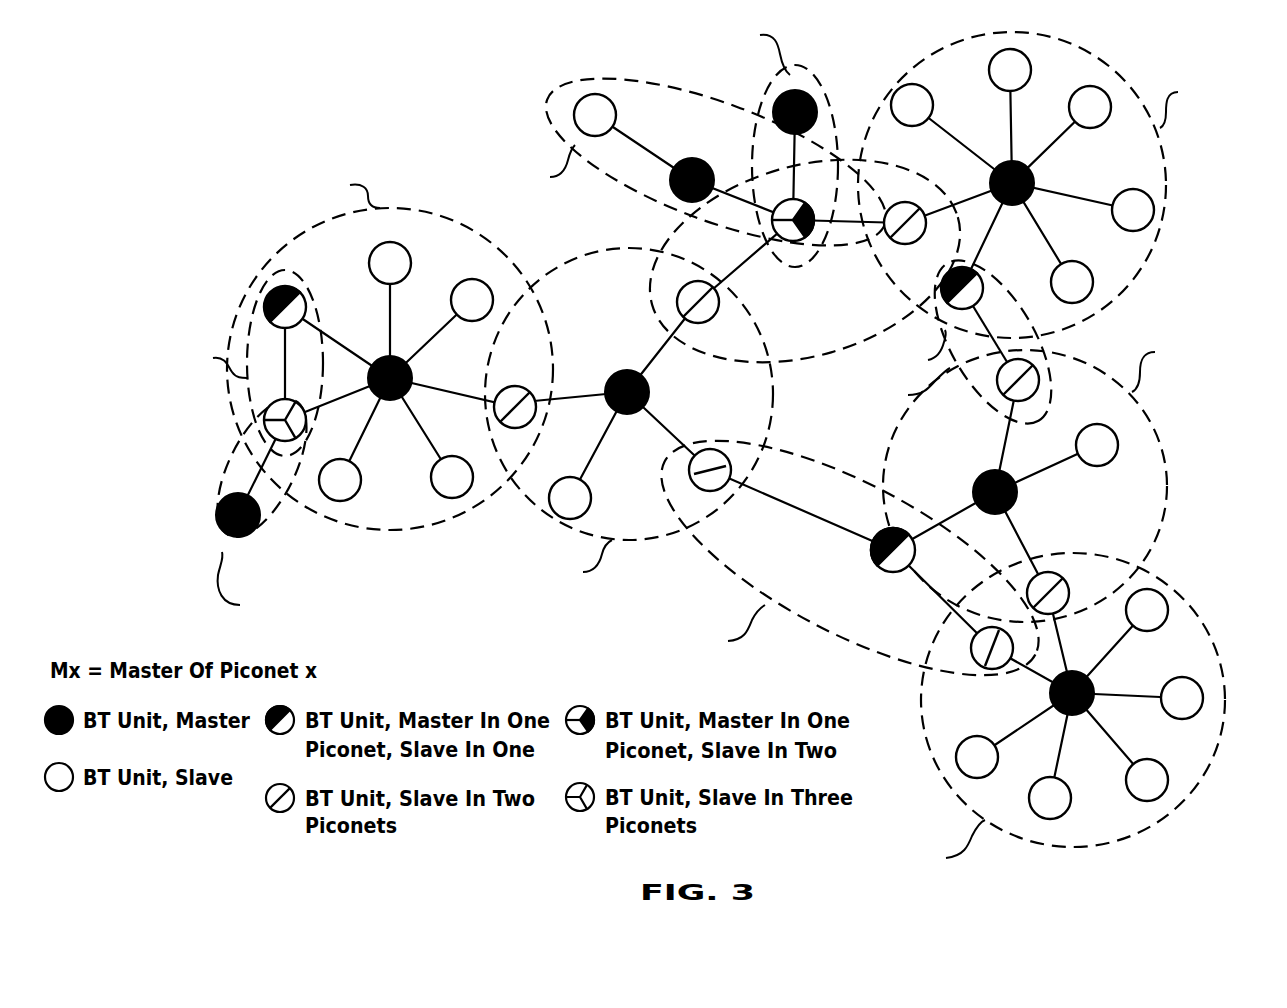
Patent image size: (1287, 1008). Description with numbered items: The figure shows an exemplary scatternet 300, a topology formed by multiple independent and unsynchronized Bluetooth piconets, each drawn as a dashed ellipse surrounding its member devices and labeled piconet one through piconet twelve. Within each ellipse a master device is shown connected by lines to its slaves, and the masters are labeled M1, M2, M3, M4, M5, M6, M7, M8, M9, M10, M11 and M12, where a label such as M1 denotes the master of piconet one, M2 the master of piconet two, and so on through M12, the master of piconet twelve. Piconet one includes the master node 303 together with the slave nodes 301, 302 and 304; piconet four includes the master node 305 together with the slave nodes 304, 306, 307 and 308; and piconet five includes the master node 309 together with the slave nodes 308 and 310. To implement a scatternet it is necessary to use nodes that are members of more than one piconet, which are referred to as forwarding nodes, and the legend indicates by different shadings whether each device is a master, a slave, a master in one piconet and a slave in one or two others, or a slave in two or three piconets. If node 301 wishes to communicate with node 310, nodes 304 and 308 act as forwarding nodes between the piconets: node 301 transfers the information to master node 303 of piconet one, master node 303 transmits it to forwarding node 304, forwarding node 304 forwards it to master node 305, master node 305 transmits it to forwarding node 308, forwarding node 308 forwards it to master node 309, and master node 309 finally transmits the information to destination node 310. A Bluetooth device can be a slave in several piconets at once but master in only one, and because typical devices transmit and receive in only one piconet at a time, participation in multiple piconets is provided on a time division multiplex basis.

The scatternet 300 is at (237, 92).
The slave node 301 is at (355, 498).
The slave node 302 is at (466, 494).
The master node 303 is at (403, 402).
The forwarding node 304 is at (522, 424).
The master node 305 is at (650, 395).
The slave node 306 is at (592, 497).
The slave node 307 is at (678, 298).
The forwarding node 308 is at (714, 492).
The master node 309 is at (893, 572).
The destination node 310 is at (971, 648).
The master of piconet 1 M1 is at (380, 358).
The master of piconet 2 M2 is at (270, 293).
The master of piconet 3 M3 is at (252, 535).
The master of piconet 4 M4 is at (612, 375).
The master of piconet 5 M5 is at (875, 565).
The master of piconet 6 M6 is at (1092, 687).
The master of piconet 7 M7 is at (1017, 495).
The master of piconet 8 M8 is at (948, 300).
The master of piconet 9 M9 is at (1035, 183).
The master of piconet 10 M10 is at (805, 238).
The master of piconet 11 M11 is at (780, 100).
The master of piconet 12 M12 is at (672, 190).